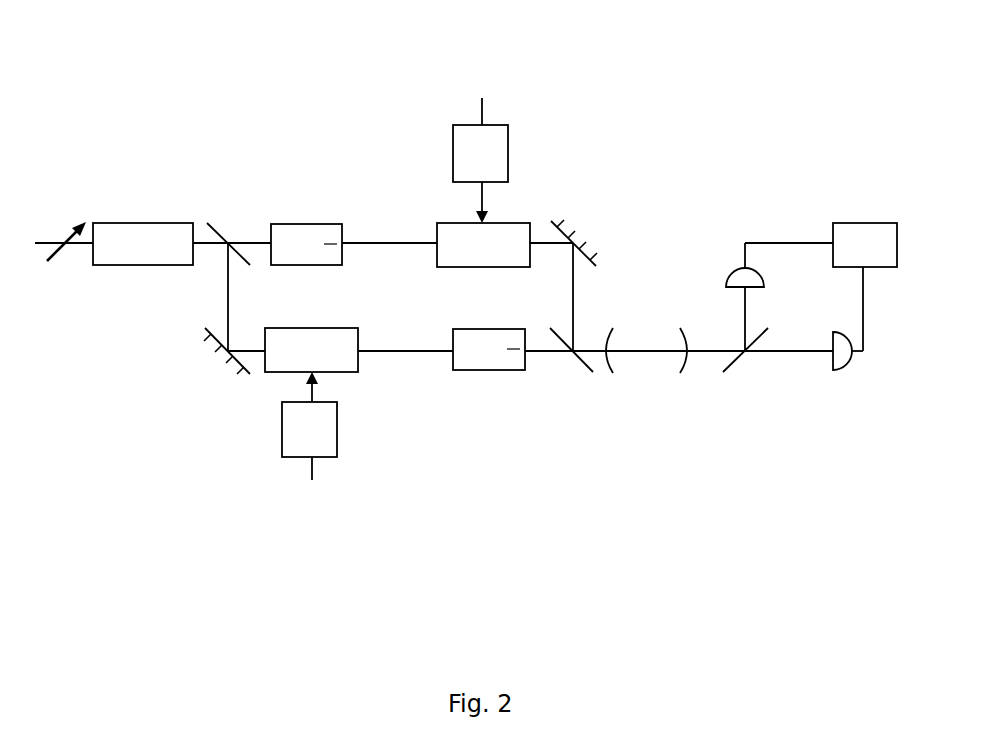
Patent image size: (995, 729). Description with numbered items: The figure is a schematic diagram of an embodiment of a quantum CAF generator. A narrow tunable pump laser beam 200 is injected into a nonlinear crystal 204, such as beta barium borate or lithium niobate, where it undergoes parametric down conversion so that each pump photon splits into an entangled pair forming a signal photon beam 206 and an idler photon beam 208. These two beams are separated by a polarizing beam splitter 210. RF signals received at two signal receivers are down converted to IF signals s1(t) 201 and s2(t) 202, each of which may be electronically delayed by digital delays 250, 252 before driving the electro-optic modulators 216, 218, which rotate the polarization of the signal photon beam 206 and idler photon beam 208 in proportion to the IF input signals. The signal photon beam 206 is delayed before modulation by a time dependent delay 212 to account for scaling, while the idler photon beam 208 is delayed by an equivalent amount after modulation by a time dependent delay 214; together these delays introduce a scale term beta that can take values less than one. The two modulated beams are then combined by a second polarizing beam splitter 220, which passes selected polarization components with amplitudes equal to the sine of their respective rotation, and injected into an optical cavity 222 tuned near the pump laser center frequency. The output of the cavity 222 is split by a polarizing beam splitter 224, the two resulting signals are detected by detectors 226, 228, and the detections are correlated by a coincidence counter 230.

The pump laser beam 200 is at (50, 240).
The IF signal s1(t) 201 is at (512, 68).
The IF signal s2(t) 202 is at (302, 517).
The nonlinear crystal 204 is at (138, 223).
The signal photon beam 206 is at (247, 240).
The idler photon beam 208 is at (228, 293).
The polarizing beam splitter 210 is at (218, 229).
The time dependent delay 212 is at (315, 223).
The time dependent delay 214 is at (485, 372).
The electro-optic modulator 216 is at (515, 223).
The electro-optic modulator 218 is at (277, 372).
The polarizing beam splitter 220 is at (580, 362).
The optical cavity 222 is at (645, 370).
The polarizing beam splitter 224 is at (733, 363).
The detector 226 is at (733, 272).
The detector 228 is at (835, 368).
The coincidence counter 230 is at (833, 240).
The digital delay 250 is at (509, 130).
The digital delay 252 is at (337, 443).